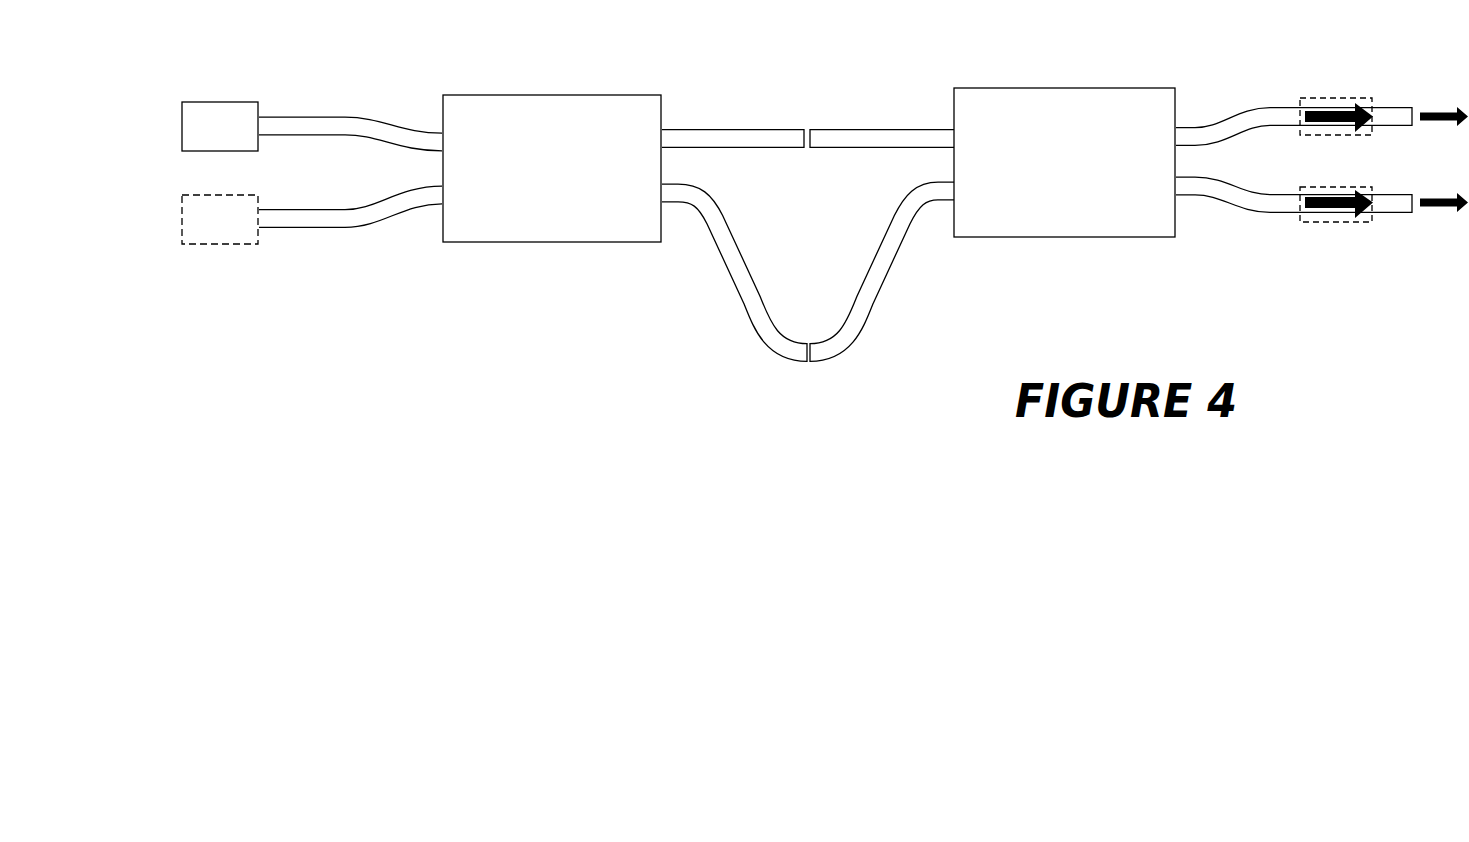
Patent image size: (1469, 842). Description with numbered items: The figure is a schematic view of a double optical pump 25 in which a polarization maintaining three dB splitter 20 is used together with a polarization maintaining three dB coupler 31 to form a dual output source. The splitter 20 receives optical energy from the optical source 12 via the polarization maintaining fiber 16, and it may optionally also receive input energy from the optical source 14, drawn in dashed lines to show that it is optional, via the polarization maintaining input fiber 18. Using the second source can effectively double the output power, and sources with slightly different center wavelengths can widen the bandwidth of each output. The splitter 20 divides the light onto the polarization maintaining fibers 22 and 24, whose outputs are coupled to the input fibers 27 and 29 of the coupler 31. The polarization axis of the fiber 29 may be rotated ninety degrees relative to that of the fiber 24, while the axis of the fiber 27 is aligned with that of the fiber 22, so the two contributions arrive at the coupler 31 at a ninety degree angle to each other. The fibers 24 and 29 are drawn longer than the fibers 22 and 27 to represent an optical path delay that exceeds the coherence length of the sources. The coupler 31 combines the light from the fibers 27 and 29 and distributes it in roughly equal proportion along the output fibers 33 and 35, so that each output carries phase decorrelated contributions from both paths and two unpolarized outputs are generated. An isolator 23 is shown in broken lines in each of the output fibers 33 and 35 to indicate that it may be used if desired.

The optical source 12 is at (240, 111).
The optical source 14 is at (230, 238).
The polarization maintaining fiber 16 is at (333, 123).
The polarization maintaining input fiber 18 is at (329, 220).
The polarization maintaining 3 dB splitter 20 is at (587, 102).
The polarization maintaining fiber 22 is at (734, 135).
The polarization maintaining fiber 24 is at (762, 333).
The double optical pump 25 is at (397, 453).
The input fiber 27 is at (843, 135).
The input fiber 29 is at (849, 339).
The polarization maintaining 3 dB coupler 31 is at (1025, 95).
The output fiber 33 is at (1237, 122).
The output fiber 35 is at (1230, 208).
The isolator 23 is at (1320, 102).